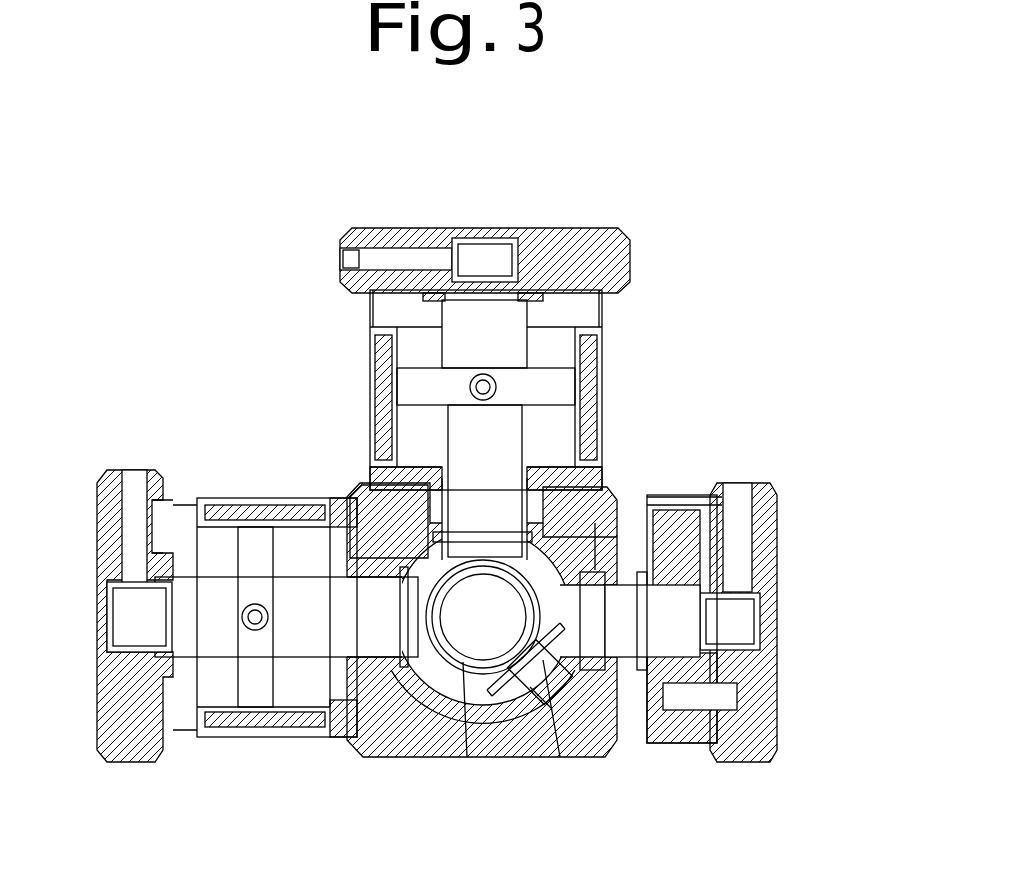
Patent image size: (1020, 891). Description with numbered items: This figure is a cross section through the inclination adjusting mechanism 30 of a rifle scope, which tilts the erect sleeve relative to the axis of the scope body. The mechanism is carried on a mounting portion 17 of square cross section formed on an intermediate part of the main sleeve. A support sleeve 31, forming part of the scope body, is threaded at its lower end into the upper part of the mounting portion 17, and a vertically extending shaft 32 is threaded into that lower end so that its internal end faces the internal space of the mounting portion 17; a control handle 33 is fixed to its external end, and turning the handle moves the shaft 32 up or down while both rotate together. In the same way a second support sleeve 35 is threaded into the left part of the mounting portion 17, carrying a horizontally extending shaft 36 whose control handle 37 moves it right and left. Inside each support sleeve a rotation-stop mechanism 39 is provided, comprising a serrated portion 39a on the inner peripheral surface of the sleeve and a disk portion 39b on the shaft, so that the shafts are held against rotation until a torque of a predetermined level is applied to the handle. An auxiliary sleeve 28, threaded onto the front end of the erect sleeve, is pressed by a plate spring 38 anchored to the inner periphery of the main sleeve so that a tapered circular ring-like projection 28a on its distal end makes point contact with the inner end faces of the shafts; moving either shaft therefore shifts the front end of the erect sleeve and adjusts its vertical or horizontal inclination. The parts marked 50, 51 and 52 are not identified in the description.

The mounting portion 17 is at (368, 485).
The auxiliary sleeve 28 is at (462, 680).
The circular ring-like projection 28a is at (427, 690).
The inclination adjusting mechanism 30 is at (297, 373).
The support sleeve 31 is at (380, 470).
The shaft 32 is at (440, 342).
The control handle 33 is at (415, 228).
The support sleeve 35 is at (340, 723).
The shaft 36 is at (213, 645).
The control handle 37 is at (97, 563).
The plate spring 38 is at (535, 692).
The rotation-stop mechanism 39 is at (548, 360).
The serrated portion 39a is at (557, 430).
The disk portion 39b is at (545, 385).
The end cap 50 is at (785, 565).
The seat ring 51 is at (595, 662).
The port 52 is at (777, 680).